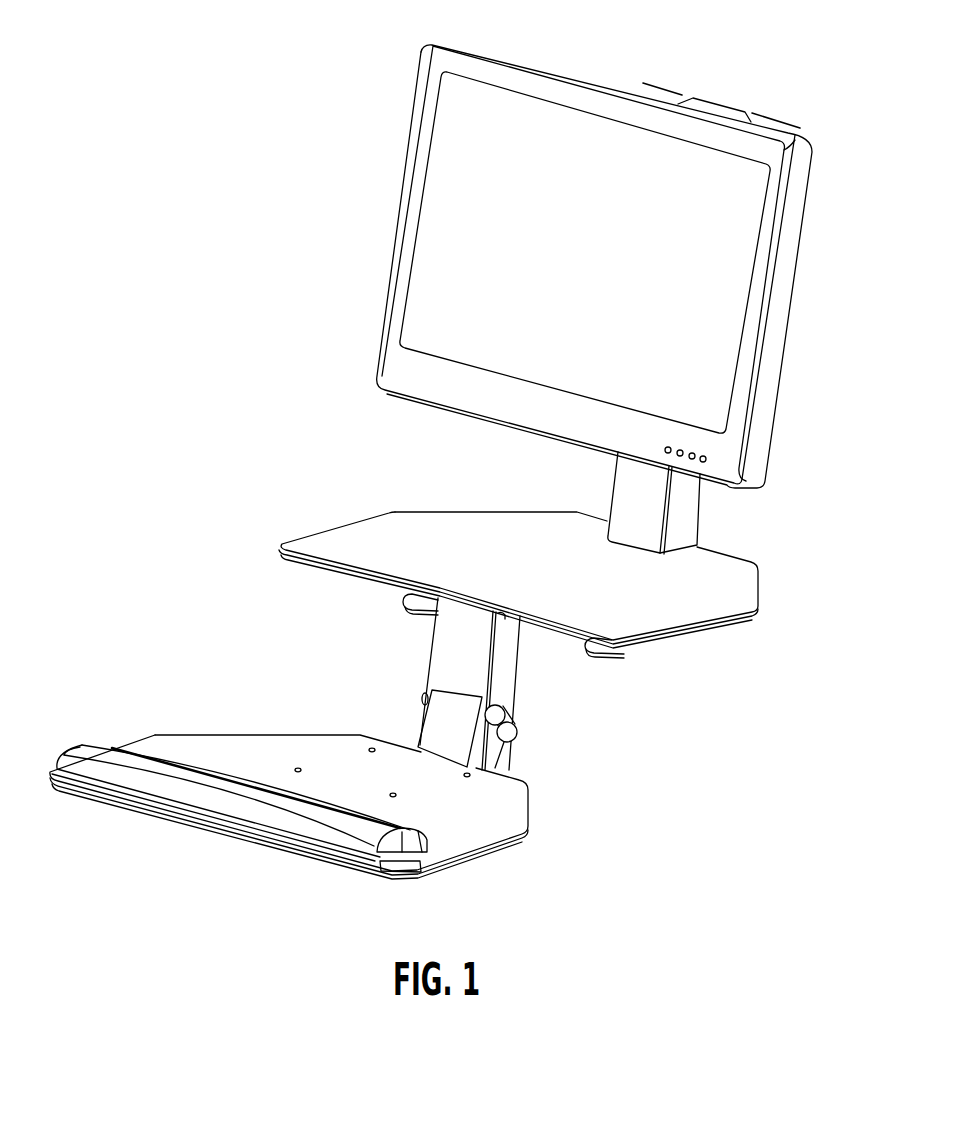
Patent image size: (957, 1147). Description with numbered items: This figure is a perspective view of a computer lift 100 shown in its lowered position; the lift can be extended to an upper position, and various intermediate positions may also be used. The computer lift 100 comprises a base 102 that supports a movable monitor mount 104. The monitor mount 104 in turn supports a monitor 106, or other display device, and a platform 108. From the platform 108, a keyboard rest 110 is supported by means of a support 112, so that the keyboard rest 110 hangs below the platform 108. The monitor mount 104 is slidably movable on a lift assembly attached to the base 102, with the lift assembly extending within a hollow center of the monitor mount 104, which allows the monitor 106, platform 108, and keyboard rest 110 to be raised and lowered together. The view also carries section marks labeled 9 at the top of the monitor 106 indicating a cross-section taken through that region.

The workstation system 100 is at (222, 227).
The mounting bracket 102 is at (609, 658).
The upper support column 104 is at (703, 516).
The display monitor 106 is at (799, 258).
The work surface tray 108 is at (758, 601).
The keyboard tray 110 is at (478, 857).
The lower support column 112 is at (517, 695).
The section line 9- 9 is at (658, 84).